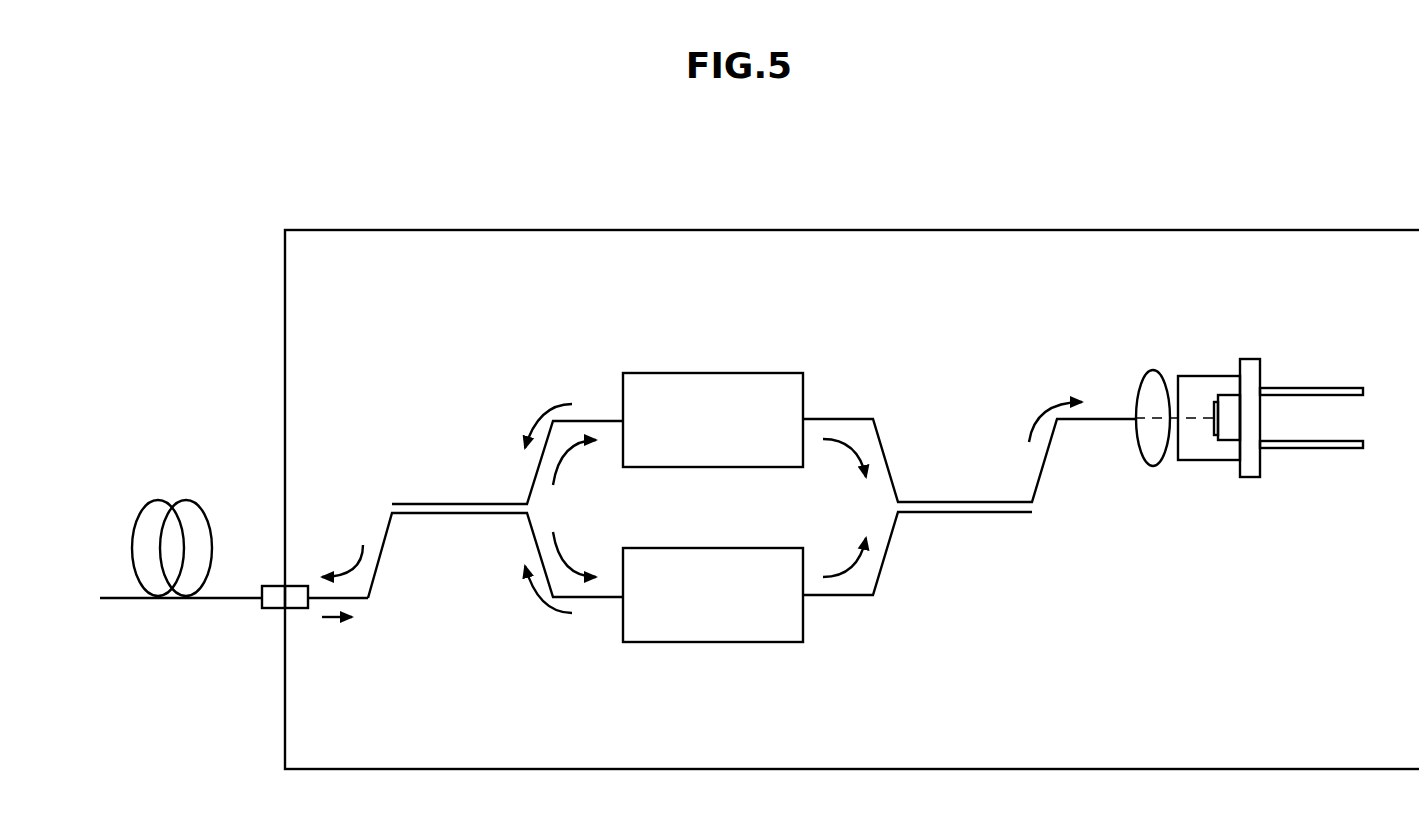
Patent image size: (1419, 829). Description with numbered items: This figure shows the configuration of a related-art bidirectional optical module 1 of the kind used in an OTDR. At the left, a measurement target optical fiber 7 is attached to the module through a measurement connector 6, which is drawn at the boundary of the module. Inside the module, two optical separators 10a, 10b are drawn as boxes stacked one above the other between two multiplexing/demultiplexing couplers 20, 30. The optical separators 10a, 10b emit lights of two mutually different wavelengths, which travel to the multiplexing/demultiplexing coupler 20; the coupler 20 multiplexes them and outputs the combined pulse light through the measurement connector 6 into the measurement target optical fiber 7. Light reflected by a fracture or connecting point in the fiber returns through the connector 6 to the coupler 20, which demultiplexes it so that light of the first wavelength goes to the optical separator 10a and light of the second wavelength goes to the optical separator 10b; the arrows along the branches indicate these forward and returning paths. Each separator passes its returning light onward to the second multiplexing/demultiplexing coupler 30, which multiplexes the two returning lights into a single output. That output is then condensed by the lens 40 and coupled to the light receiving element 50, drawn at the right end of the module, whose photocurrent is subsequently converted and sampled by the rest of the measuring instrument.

The bidirectional optical module 1 is at (1258, 230).
The measurement connector 6 is at (300, 586).
The measurement target optical fiber 7 is at (240, 596).
The optical separator 10a is at (708, 372).
The optical separator 10b is at (712, 644).
The multiplexing/demultiplexing coupler 20 is at (458, 503).
The multiplexing/demultiplexing coupler 30 is at (962, 500).
The lens 40 is at (1152, 370).
The light receiving element 50 is at (1210, 375).